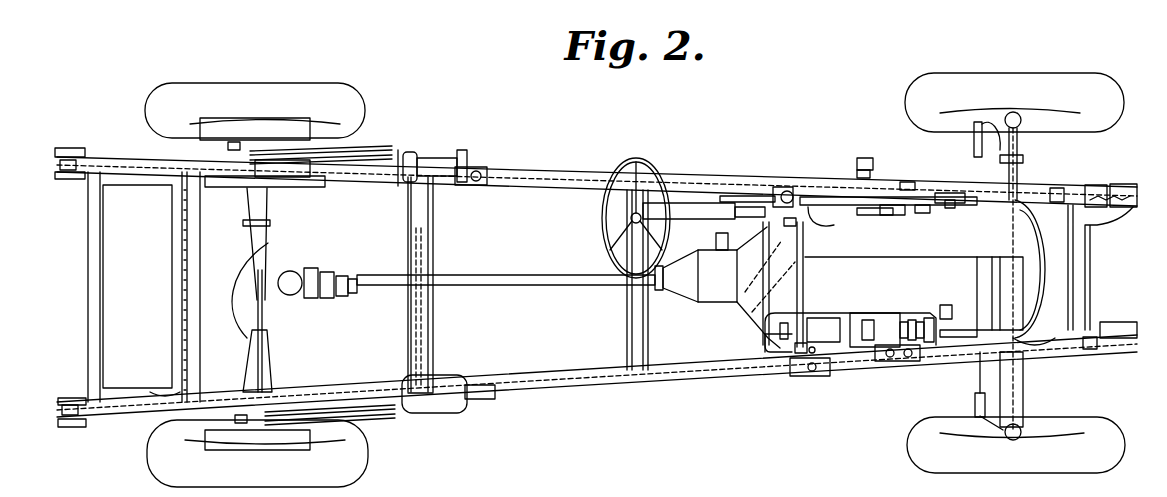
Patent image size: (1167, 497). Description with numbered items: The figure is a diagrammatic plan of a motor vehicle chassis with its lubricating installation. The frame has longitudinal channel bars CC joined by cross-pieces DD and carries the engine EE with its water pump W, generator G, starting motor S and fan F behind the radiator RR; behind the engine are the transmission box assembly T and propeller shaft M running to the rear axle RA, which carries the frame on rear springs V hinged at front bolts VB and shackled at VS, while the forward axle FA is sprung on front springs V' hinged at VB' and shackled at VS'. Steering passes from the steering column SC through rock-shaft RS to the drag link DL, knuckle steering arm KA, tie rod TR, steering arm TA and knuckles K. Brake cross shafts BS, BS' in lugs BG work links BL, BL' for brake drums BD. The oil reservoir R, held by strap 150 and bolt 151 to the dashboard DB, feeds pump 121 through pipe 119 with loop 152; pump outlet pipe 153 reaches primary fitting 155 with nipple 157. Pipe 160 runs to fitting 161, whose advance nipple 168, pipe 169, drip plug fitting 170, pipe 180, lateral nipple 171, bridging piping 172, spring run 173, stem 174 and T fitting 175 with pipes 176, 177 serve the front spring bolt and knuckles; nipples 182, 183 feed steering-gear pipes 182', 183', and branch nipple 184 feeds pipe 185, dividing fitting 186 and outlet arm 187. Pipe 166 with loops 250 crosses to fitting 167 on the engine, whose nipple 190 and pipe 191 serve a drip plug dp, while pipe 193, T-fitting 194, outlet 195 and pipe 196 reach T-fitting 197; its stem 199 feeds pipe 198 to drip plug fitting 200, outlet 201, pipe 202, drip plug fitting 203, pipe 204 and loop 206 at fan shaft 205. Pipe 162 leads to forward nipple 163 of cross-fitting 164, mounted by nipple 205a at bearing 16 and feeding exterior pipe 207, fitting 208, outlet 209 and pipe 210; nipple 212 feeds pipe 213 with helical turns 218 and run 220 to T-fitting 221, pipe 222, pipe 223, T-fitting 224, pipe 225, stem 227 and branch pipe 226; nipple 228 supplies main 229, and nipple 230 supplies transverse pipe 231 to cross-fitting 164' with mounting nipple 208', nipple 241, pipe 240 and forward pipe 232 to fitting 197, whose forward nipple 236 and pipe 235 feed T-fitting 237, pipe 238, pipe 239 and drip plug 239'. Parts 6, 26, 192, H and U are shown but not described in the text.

The longitudinal channel bars CC is at (536, 182).
The rear vehicle springs V is at (144, 287).
The cross-pieces DD is at (434, 327).
The chain drive 6 is at (416, 228).
The brake cross shaft BS is at (403, 323).
The brake cross shaft BS' is at (460, 260).
The chain link 26 is at (430, 364).
The transverse pipe 231 is at (438, 288).
The propeller shaft M is at (525, 276).
The branch pipe 226 is at (290, 297).
The transmission box assembly T is at (700, 303).
The lateral outlet nipple 190 is at (736, 262).
The dividing fitting 167 is at (684, 289).
The link rod 192 is at (763, 276).
The pipe 193 is at (748, 308).
The T-fitting 194 is at (752, 322).
The lateral outlet 195 is at (762, 333).
The pipe 196 is at (764, 352).
The drip plug fitting 200 is at (798, 354).
The transverse pipe length 166 is at (790, 240).
The copper pipe 119 is at (798, 224).
The pump 121 is at (790, 232).
The engine EE is at (952, 262).
The T-fitting stem 199 is at (790, 292).
The metal pipe 198 is at (790, 306).
The engine starting motor S is at (833, 318).
The lateral outlet 201 is at (821, 332).
The generator G is at (893, 320).
The pipe 202 is at (884, 314).
The drip plug fitting 203 is at (947, 305).
The pipe 204 is at (948, 305).
The water pump W is at (965, 333).
The loop 206 is at (988, 282).
The pipe 177 is at (1011, 318).
The fan shaft 205 is at (1008, 254).
The steering column SC is at (690, 203).
The bolt 151 is at (776, 196).
The pipe 191 is at (742, 204).
The dashboard DB is at (783, 186).
The supporting strap 150 is at (788, 190).
The oil reservoir R is at (808, 188).
The pump outlet pipe 153 is at (820, 205).
The loop 152 is at (834, 228).
The axial nipple 157 is at (813, 182).
The primary distributing fitting 155 is at (830, 184).
The outlet arm 187 is at (858, 185).
The rock-shaft RS is at (870, 176).
The front spring shackles VS' is at (848, 248).
The dividing fitting 186 is at (903, 182).
The pipe length 160 is at (914, 186).
The T fitting 161 is at (946, 190).
The drag link DL is at (944, 194).
The knuckle steering arm KA is at (985, 140).
The branch outlet nipple 184 is at (948, 193).
The lateral nipple 182 is at (959, 181).
The pipe length 169 is at (985, 195).
The pipe 185 is at (894, 215).
The lateral nipple 183 is at (927, 214).
The pipe 183' is at (893, 237).
The advance nipple 168 is at (948, 208).
The pipe 182' is at (957, 224).
The T fitting 175 is at (1012, 230).
The stem 174 is at (1010, 242).
The steering knuckle head H is at (1016, 112).
The pipe 176 is at (1018, 155).
The T drip plug fitting 170 is at (1068, 188).
The front vehicle springs V' is at (1075, 239).
The pipe 180 is at (1110, 188).
The spring run 173 is at (1040, 208).
The flexible bridging piping 172 is at (1098, 226).
The lateral nipple 171 is at (1088, 244).
The radiator RR is at (1080, 281).
The fan F is at (1028, 300).
The forward axle FA is at (1024, 366).
The knuckles K is at (1019, 437).
The steering arm TA is at (1003, 434).
The tie rod TR is at (975, 398).
The pipe 239 is at (966, 373).
The drip plug 239' is at (1109, 325).
The front spring forward bolt VB' is at (1120, 369).
The T-fitting 237 is at (915, 361).
The pipe 238 is at (902, 362).
The pipe 235 is at (870, 366).
The extra loops 250 is at (814, 355).
The forward nipple 236 is at (812, 378).
The T-fitting 197 is at (808, 378).
The pipe 232 is at (656, 380).
The pipe length 162 is at (580, 170).
The exterior pipe 207 is at (437, 167).
The lateral outlet 209 is at (412, 150).
The pipe 210 is at (403, 150).
The fitting 208 is at (449, 136).
The bearing 16 is at (448, 160).
The dividing pipe fitting 164 is at (489, 161).
The nipple 228 is at (466, 163).
The mounting nipple 205a is at (475, 170).
The forward nipple 163 is at (486, 188).
The nipple 212 is at (474, 190).
The nipple 230 is at (460, 188).
The pipe 213 is at (440, 190).
The helical turns 218 is at (410, 192).
The rear spring front bolt VB is at (373, 207).
The drip plug fitting dp is at (60, 166).
The lugs BG is at (440, 414).
The nipple 241 is at (478, 378).
The cross-fitting 164' is at (500, 401).
The mounting nipple 208' is at (490, 429).
The brake link BL is at (322, 277).
The brake link BL' is at (322, 272).
The brake drums BD is at (292, 121).
The pipe run 220 is at (326, 188).
The universal joint U is at (238, 174).
The T-fitting 221 is at (252, 185).
The pipe 222 is at (270, 150).
The main 229 is at (94, 150).
The pipe length 223 is at (250, 240).
The T-fitting 224 is at (256, 308).
The rear axle RA is at (250, 342).
The pipe 225 is at (270, 362).
The stem 227 is at (290, 270).
The rear spring shackles VS is at (60, 441).
The pipe 240 is at (116, 418).